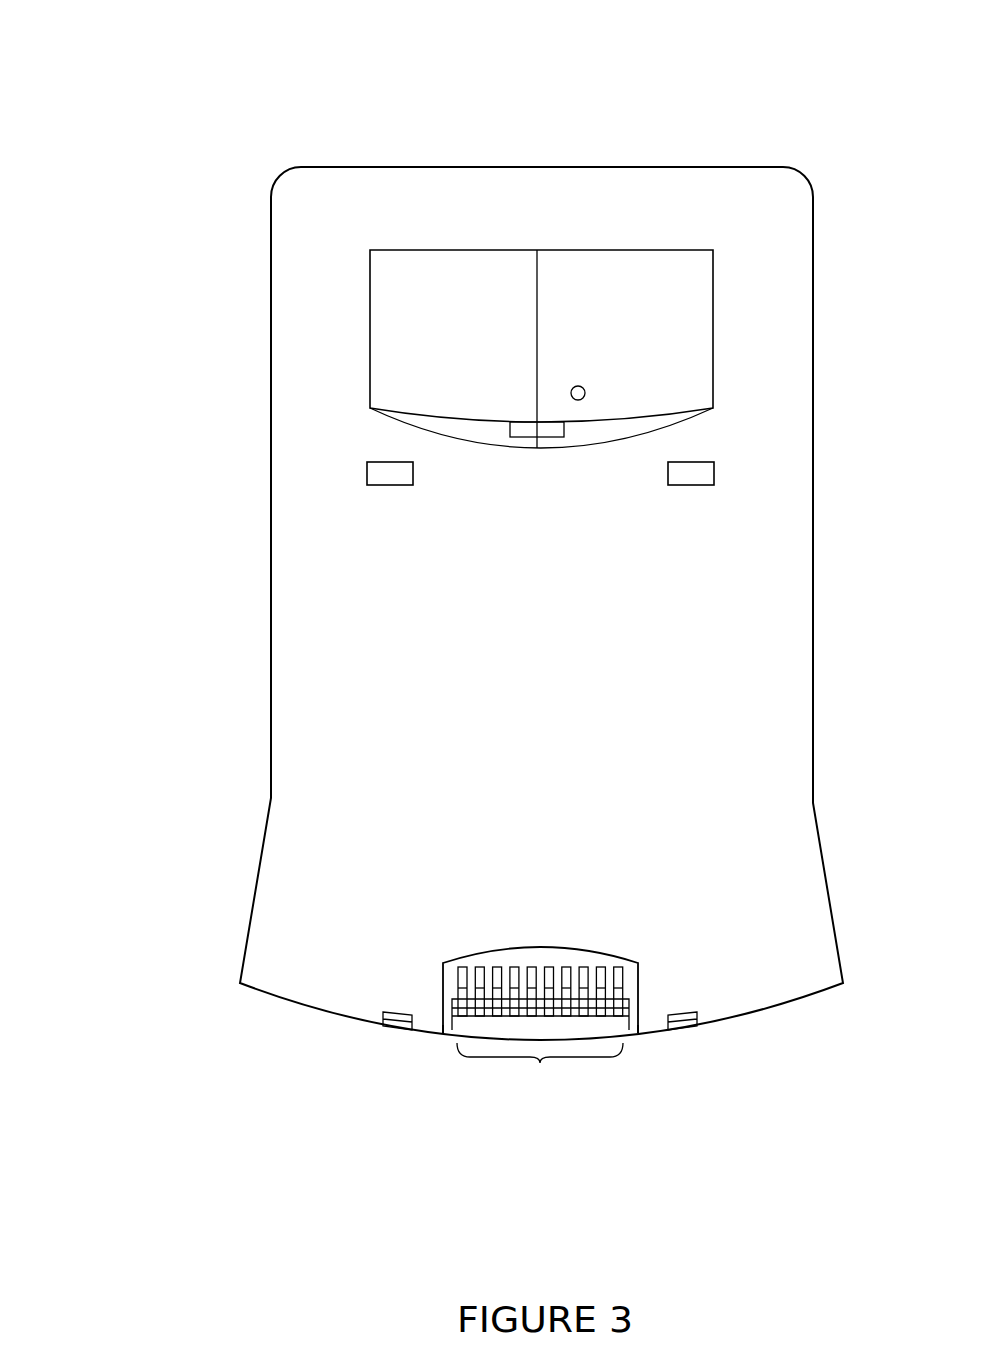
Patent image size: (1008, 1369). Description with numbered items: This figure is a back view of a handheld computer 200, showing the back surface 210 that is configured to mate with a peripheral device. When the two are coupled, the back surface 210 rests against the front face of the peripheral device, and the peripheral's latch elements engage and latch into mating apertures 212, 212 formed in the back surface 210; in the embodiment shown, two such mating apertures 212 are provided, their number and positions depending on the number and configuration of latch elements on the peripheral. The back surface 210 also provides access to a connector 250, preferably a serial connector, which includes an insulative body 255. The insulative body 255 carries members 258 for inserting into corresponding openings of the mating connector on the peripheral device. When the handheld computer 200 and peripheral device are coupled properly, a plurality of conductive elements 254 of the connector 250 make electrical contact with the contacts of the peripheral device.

The handheld computer 200 is at (232, 158).
The back surface 210 is at (570, 235).
The mating apertures 212 is at (390, 471).
The connector 250 is at (418, 981).
The conductive elements 254 is at (540, 1075).
The insulative body 255 is at (628, 979).
The members 258 is at (449, 1030).